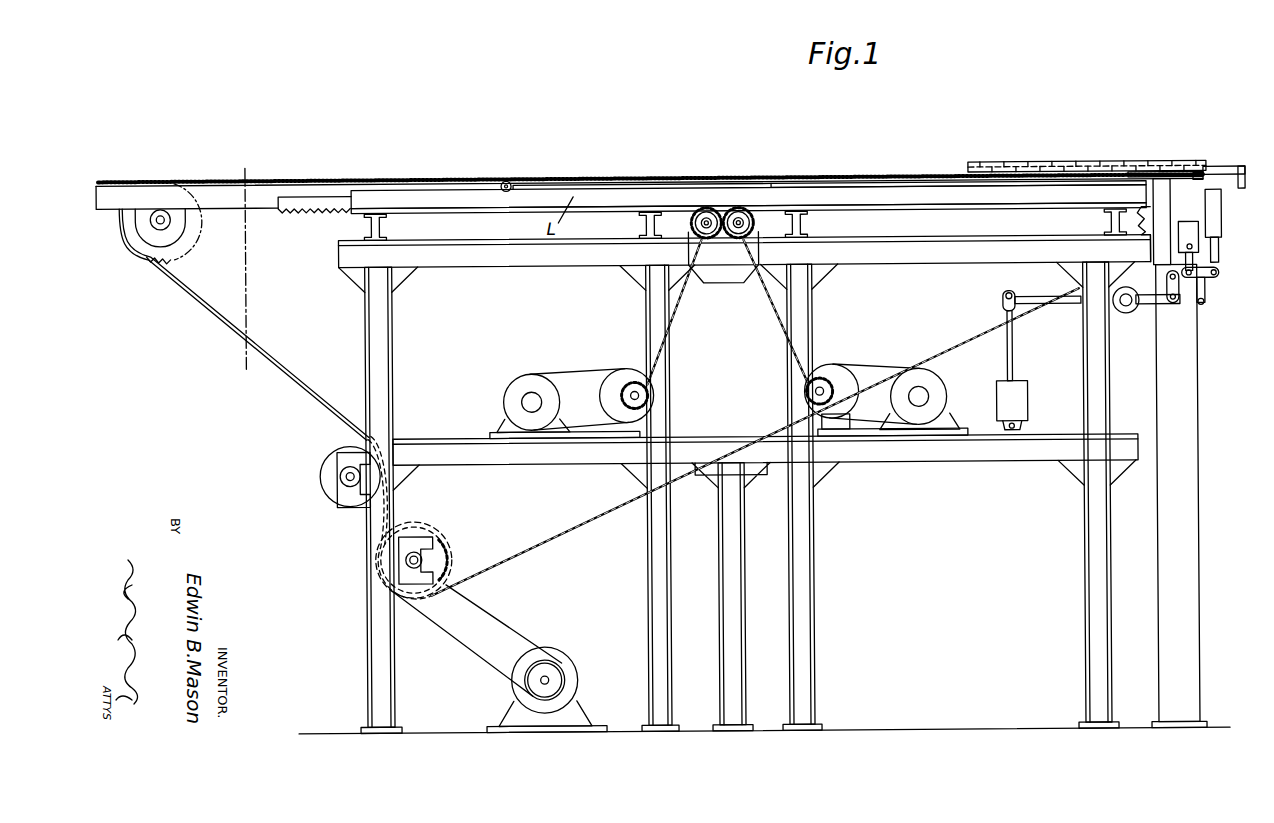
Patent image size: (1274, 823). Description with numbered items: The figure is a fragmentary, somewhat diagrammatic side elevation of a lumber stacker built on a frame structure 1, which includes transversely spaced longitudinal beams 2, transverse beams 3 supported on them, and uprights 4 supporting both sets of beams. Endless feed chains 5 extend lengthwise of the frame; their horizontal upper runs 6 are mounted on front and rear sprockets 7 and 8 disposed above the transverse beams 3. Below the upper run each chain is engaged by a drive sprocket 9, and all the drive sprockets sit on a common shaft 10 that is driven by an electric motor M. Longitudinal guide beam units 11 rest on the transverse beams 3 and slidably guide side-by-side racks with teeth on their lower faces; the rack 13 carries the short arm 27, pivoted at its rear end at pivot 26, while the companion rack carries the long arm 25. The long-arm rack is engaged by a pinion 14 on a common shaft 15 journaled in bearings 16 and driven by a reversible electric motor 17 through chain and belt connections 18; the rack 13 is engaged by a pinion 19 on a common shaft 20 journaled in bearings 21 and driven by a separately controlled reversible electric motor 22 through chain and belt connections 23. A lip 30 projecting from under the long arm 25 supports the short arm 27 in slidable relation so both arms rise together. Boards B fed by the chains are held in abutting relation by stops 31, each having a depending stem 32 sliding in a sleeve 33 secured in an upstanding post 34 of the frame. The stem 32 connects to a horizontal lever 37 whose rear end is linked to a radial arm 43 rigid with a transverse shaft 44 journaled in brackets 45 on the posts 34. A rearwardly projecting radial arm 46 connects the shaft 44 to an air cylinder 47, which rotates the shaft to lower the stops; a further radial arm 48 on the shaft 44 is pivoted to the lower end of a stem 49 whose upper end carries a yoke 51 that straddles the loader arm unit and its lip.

The frame structure 1 is at (1031, 474).
The longitudinal beams 2 is at (499, 263).
The transverse beams 3 is at (389, 229).
The uprights 4 is at (366, 638).
The endless feed chains 5 is at (297, 378).
The upper runs 6 is at (392, 176).
The front sprockets 7 is at (1150, 223).
The rear sprockets 8 is at (185, 239).
The drive sprocket 9 is at (447, 577).
The common shaft 10 is at (420, 552).
The longitudinal guide beam units 11 is at (436, 186).
The rack 13 is at (312, 212).
The pinion 14 is at (748, 258).
The common shaft 15 is at (741, 215).
The bearings 16 is at (752, 211).
The reversible electric motor 17 is at (932, 394).
The chain and belt connections 18 is at (770, 322).
The pinion 19 is at (688, 268).
The common shaft 20 is at (712, 209).
The bearings 21 is at (706, 215).
The reversible electric motor 22 is at (515, 393).
The chain and belt connections 23 is at (640, 366).
The long arm 25 is at (1146, 174).
The pivot 26 is at (511, 179).
The short arm 27 is at (600, 182).
The lip 30 is at (850, 183).
The stops 31 is at (1222, 169).
The depending stem 32 is at (1221, 256).
The sleeve 33 is at (1224, 216).
The upstanding post 34 is at (1168, 535).
The lever 37 is at (1212, 280).
The radial arm 43 is at (1150, 308).
The transverse shaft 44 is at (1127, 316).
The plates or brackets 45 is at (1108, 330).
The radial arm 46 is at (1038, 296).
The air cylinder 47 is at (1025, 401).
The radial arm 48 is at (1203, 290).
The stem 49 is at (1206, 308).
The yoke 51 is at (1200, 175).
The board B is at (1175, 162).
The electric motor M is at (576, 662).